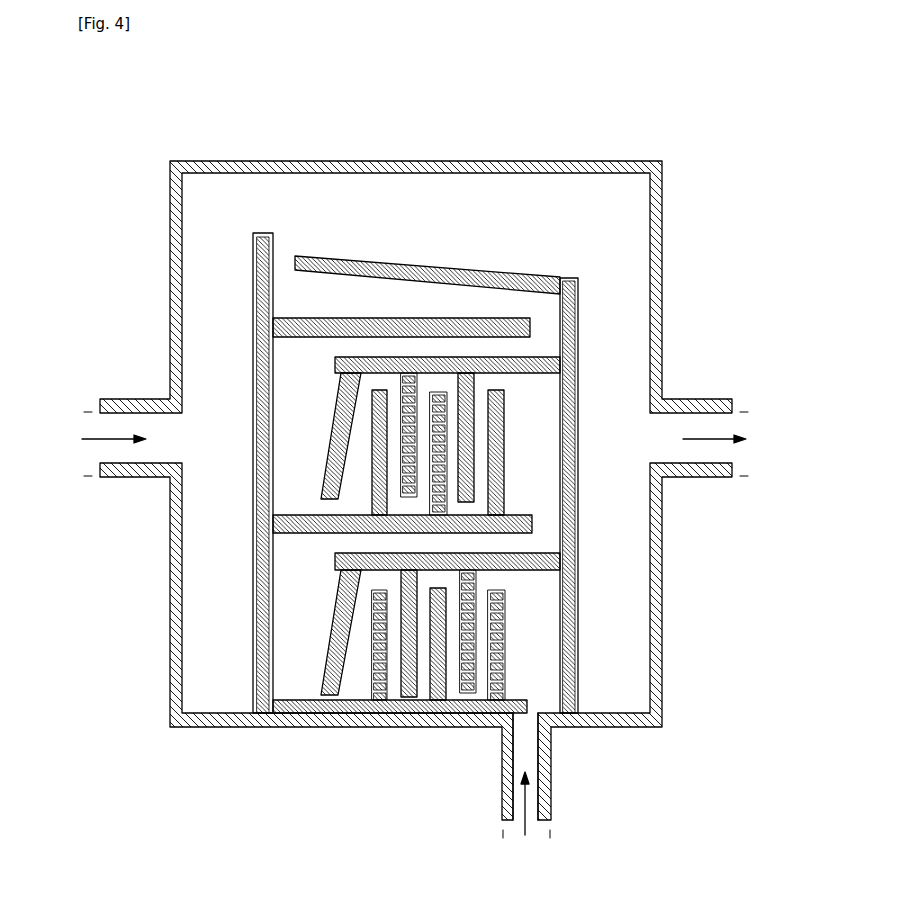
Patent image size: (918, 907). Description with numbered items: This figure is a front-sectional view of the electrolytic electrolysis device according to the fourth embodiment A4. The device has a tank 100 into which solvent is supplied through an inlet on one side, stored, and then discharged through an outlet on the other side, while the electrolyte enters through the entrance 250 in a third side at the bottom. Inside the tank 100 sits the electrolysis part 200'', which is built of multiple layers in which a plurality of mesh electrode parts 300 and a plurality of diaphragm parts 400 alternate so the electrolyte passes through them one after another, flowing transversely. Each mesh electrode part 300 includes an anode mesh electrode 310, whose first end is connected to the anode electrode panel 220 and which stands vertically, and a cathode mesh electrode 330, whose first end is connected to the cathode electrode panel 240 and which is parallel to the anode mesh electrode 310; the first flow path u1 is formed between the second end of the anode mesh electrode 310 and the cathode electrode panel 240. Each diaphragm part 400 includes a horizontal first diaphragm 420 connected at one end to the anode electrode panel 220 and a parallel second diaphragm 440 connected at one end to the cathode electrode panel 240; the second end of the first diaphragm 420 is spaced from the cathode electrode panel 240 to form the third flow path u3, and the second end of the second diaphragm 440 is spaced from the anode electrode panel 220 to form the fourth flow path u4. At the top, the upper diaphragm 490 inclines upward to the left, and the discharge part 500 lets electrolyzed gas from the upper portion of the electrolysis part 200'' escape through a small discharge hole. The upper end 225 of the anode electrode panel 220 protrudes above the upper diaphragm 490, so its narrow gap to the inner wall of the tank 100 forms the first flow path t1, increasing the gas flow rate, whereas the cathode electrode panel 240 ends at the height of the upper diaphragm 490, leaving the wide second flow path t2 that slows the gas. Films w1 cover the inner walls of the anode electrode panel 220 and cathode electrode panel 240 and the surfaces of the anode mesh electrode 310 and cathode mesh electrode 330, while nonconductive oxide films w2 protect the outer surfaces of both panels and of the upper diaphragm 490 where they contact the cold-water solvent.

The fourth embodiment A4 is at (591, 126).
The tank 100 is at (667, 235).
The anode electrode panel 220 is at (250, 673).
The upper end of the anode electrode panel 225 is at (253, 238).
The electrolysis part 200'' is at (649, 495).
The cathode electrode panel 240 is at (513, 552).
The entrance 250 is at (552, 776).
The mesh electrode part 300 is at (418, 820).
The anode mesh electrode 310 is at (504, 707).
The cathode mesh electrode 330 is at (458, 682).
The diaphragm part 400 is at (395, 820).
The first diaphragm 420 is at (428, 692).
The second diaphragm 440 is at (373, 694).
The upper diaphragm 490 is at (435, 265).
The discharge part 500 is at (280, 214).
The first flow path t1 is at (272, 230).
The second flow path t2 is at (572, 236).
The first flow path u1 is at (505, 581).
The third flow path u3 is at (445, 579).
The fourth flow path u4 is at (410, 650).
The film w1 is at (280, 677).
The nonconductive oxide film w2 is at (578, 650).